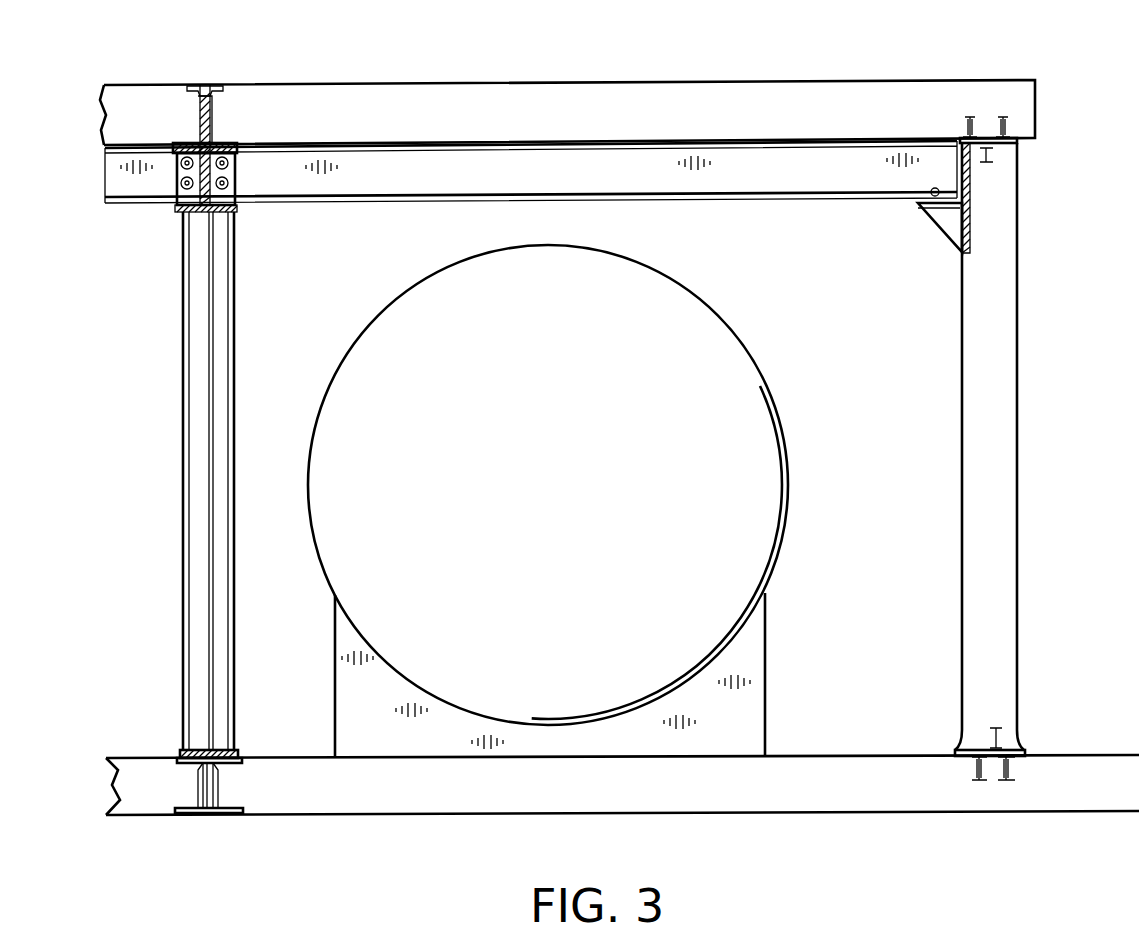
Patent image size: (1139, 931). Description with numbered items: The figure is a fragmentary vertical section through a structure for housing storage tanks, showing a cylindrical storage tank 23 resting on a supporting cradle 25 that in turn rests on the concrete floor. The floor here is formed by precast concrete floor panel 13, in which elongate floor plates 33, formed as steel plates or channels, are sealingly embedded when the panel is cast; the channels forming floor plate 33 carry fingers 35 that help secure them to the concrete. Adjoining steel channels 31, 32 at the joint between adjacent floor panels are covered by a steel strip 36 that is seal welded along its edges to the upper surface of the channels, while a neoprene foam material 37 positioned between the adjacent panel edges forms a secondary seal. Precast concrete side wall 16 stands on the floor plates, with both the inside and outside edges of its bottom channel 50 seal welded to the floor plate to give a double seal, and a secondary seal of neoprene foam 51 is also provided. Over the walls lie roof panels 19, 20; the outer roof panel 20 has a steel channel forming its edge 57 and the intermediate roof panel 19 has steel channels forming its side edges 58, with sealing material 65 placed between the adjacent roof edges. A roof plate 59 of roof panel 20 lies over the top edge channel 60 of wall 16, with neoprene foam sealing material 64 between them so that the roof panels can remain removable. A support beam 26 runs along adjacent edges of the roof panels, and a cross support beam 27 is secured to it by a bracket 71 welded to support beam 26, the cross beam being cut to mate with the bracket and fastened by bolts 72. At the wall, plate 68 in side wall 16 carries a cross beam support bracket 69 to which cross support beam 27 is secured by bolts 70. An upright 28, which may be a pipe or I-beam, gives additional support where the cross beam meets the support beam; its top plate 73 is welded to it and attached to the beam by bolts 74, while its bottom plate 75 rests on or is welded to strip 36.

The floor panel 13 is at (905, 812).
The wall section 16 is at (1016, 360).
The roof panel 19 is at (140, 95).
The roof panel 20 is at (720, 82).
The storage tank 23 is at (540, 527).
The supporting cradle 25 is at (765, 715).
The support beam 26 is at (173, 185).
The cross support beam 27 is at (828, 180).
The upright 28 is at (190, 405).
The steel channel 31 is at (222, 815).
The steel channel 32 is at (193, 815).
The floor plate 33 is at (1004, 782).
The fingers 35 is at (977, 782).
The steel strip 36 is at (236, 755).
The neoprene foam material 37 is at (200, 790).
The bottom channel 50 is at (1018, 752).
The neoprene foam 51 is at (1010, 740).
The edge 57 is at (206, 88).
The side edges 58 is at (190, 88).
The roof plate 59 is at (1020, 125).
The top edge channel 60 is at (1020, 142).
The sealing material 64 is at (985, 122).
The sealing material 65 is at (215, 112).
The plate 68 is at (937, 212).
The cross beam support bracket 69 is at (958, 240).
The bolts 70 is at (931, 192).
The bracket 71 is at (238, 165).
The bolts 72 is at (238, 180).
The top plate 73 is at (176, 207).
The bolts 74 is at (183, 207).
The bottom plate 75 is at (185, 750).